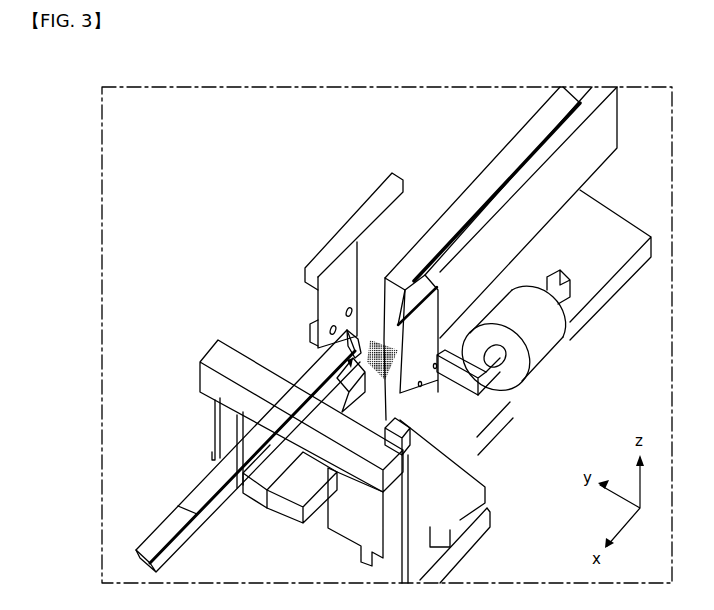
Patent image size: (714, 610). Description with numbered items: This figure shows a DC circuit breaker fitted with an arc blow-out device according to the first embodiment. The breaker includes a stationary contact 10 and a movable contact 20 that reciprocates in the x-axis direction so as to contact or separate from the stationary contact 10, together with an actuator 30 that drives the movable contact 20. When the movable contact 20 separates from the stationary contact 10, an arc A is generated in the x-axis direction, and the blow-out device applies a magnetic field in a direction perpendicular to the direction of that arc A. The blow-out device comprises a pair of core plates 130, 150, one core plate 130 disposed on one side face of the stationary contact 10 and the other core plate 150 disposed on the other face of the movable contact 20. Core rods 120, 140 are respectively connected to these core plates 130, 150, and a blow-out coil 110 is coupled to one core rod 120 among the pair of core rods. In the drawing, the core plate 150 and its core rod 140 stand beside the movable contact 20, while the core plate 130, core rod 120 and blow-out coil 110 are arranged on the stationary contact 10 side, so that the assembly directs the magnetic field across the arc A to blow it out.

The stationary contact 10 is at (455, 213).
The movable contact 20 is at (300, 352).
The actuator 30 is at (323, 562).
The blow-out coil 110 is at (543, 348).
The core rod 120 is at (485, 390).
The core plate 130 is at (420, 345).
The core rod 140 is at (328, 250).
The core plate 150 is at (318, 302).
The arc A is at (375, 336).